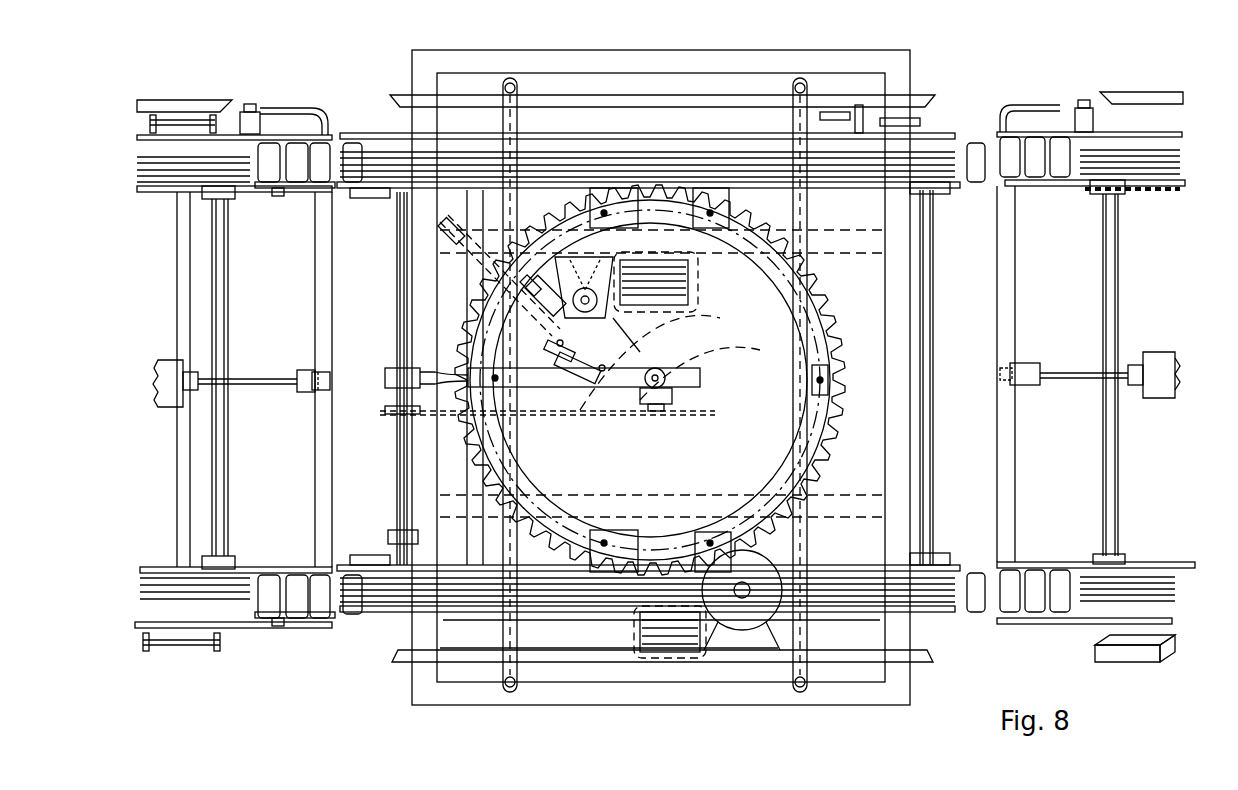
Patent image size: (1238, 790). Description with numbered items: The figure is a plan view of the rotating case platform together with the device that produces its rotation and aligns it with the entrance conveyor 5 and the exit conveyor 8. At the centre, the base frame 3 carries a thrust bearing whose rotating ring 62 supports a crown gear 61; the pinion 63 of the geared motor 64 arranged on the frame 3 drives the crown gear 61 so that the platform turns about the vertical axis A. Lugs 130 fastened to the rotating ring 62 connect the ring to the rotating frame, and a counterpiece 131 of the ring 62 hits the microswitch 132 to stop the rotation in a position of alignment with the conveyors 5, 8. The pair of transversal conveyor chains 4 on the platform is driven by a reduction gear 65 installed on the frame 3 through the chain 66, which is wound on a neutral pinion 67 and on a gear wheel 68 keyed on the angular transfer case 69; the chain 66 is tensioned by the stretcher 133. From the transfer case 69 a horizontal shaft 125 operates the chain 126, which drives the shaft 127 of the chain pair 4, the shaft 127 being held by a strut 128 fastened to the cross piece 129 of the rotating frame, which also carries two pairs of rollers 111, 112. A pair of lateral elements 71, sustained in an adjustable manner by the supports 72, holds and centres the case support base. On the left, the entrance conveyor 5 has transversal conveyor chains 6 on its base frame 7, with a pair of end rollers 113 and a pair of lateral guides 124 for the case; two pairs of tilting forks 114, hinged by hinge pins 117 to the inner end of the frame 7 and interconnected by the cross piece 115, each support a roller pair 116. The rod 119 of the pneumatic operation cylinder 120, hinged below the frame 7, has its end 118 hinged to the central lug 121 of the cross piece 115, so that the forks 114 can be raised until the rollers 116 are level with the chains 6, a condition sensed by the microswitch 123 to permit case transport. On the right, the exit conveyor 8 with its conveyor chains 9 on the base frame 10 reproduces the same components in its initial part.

The base frame 3 is at (832, 55).
The pair of transversal conveyor chains 4 is at (352, 143).
The entrance conveyor 5 is at (185, 660).
The transversal conveyor chains 6 is at (140, 172).
The base frame 7 is at (140, 137).
The exit conveyor 8 is at (1136, 668).
The conveyor chains 9 is at (1183, 165).
The base frame 10 is at (1182, 100).
The crown gear 61 is at (832, 330).
The rotating ring 62 is at (830, 380).
The pinion 63 is at (772, 572).
The geared motor 64 is at (640, 632).
The reduction gear 65 is at (690, 262).
The chain 66 is at (700, 322).
The neutral pinion 67 is at (598, 258).
The gear wheel 68 is at (742, 350).
The angular transfer case 69 is at (672, 402).
The pair of lateral elements 71 is at (556, 100).
The supports 72 is at (800, 72).
The pair of rollers 111 is at (320, 143).
The pair of rollers 112 is at (977, 142).
The pair of end rollers 113 is at (268, 143).
The tilting forks 114 is at (300, 190).
The cross piece 115 is at (314, 300).
The roller pair 116 is at (300, 108).
The hinge pin 117 is at (215, 199).
The rod end 118 is at (302, 393).
The rod 119 is at (265, 379).
The pneumatic operation cylinder 120 is at (165, 360).
The central lug 121 is at (326, 392).
The microswitch 123 is at (248, 104).
The pair of lateral guides 124 is at (160, 100).
The horizontal shaft 125 is at (632, 416).
The chain 126 is at (542, 416).
The shaft 127 is at (395, 538).
The strut 128 is at (385, 374).
The cross piece 129 is at (396, 466).
The lugs 130 is at (640, 215).
The counterpiece 131 is at (548, 322).
The microswitch 132 is at (485, 318).
The stretcher 133 is at (600, 388).
The vertical axis A is at (668, 378).